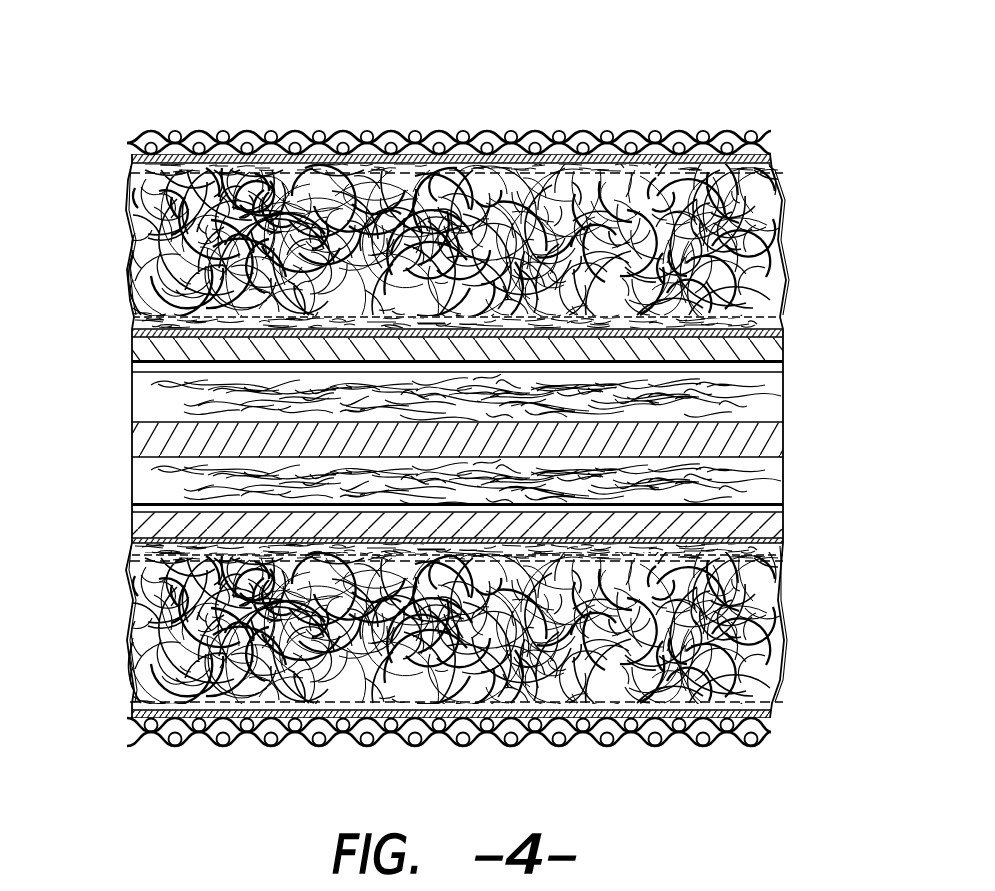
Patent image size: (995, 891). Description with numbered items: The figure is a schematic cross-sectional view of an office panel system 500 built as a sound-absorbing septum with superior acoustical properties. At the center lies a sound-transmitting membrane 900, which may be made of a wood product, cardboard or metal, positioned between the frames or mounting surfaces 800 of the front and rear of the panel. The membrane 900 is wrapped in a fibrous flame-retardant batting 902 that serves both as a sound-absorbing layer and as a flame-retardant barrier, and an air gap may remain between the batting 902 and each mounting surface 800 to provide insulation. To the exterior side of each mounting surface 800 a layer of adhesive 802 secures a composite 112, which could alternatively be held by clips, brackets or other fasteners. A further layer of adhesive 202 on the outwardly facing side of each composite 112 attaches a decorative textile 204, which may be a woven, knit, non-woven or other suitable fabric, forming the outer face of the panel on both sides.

The multilayer laminate assembly 500 is at (304, 79).
The decorative textile 204 is at (633, 132).
The layer of adhesive 202 is at (773, 158).
The composite 112 is at (112, 163).
The layer of adhesive 802 is at (785, 335).
The fibrous flame-retardant batting 902 is at (782, 387).
The mounting surface 800 is at (122, 347).
The sound-transmitting membrane 900 is at (783, 447).